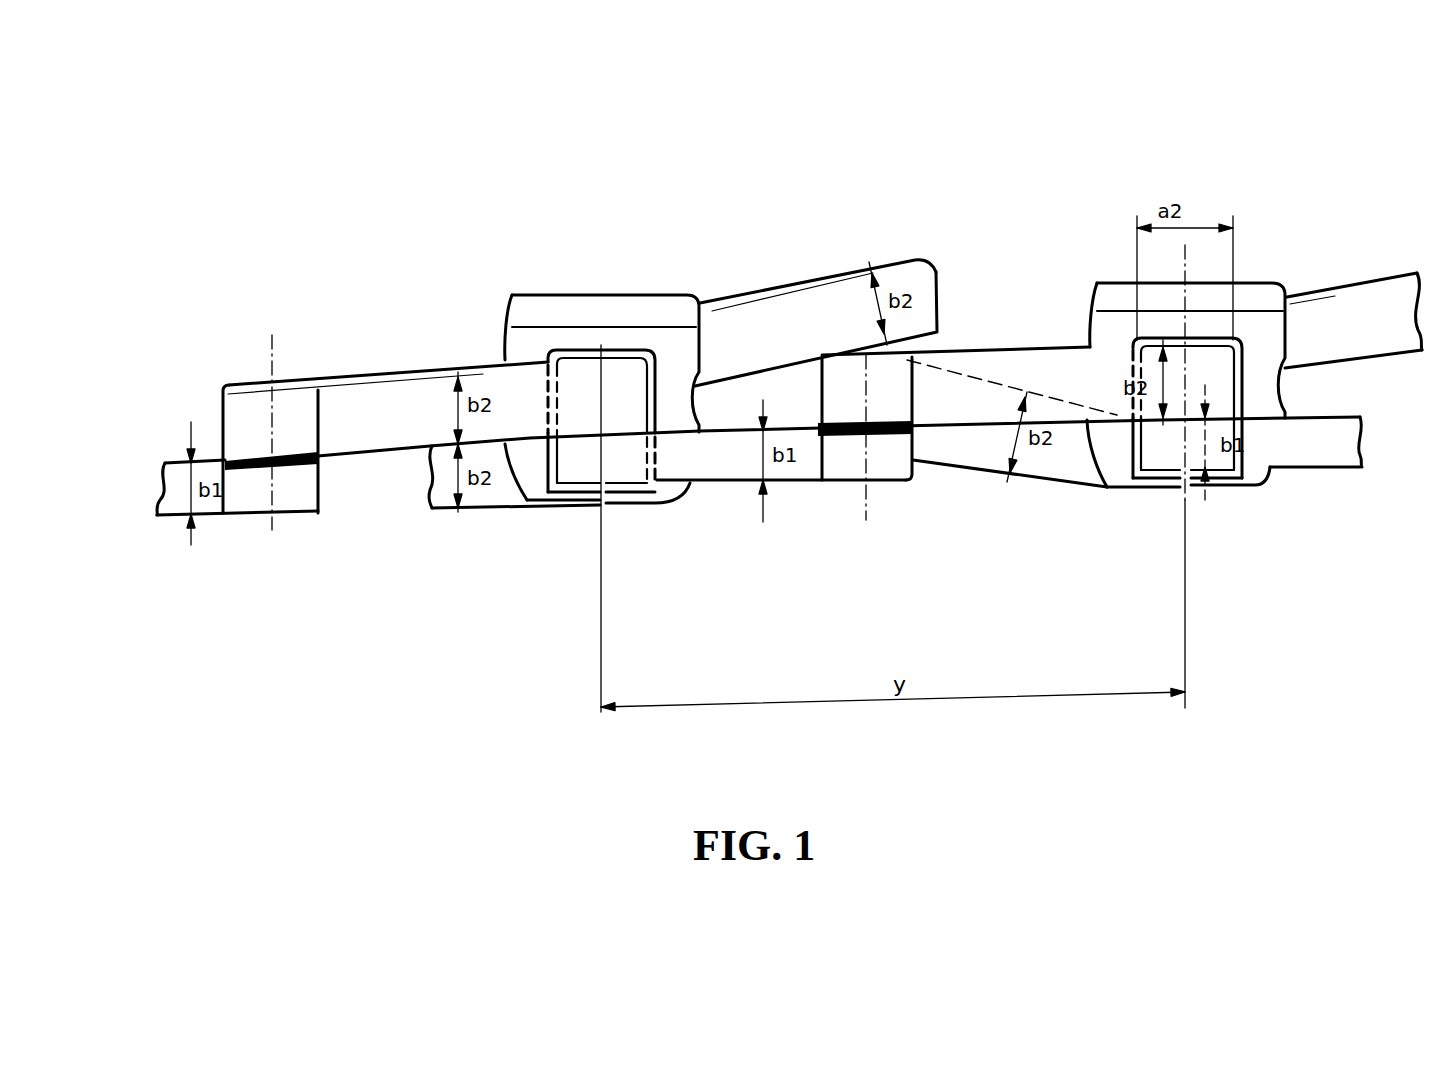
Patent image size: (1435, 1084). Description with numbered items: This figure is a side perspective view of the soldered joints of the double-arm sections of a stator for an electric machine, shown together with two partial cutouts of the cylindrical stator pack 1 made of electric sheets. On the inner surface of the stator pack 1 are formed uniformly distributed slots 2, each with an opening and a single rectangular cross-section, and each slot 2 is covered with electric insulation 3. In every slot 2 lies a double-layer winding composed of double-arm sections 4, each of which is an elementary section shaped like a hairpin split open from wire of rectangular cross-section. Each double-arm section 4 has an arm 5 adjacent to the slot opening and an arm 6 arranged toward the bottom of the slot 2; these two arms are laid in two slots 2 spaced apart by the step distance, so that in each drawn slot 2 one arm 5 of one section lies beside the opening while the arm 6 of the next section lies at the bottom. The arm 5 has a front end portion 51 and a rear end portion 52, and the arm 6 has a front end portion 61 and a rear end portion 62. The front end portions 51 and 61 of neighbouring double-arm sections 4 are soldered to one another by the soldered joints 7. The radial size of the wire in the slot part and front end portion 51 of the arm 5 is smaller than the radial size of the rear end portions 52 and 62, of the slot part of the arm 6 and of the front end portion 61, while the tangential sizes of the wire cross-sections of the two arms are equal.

The stator pack 1 is at (667, 337).
The slot 2 is at (553, 343).
The electric insulation 3 is at (613, 358).
The double-arm section 4 is at (890, 257).
The arm adjacent to opening 5 is at (1158, 445).
The arm at bottom of slot 6 is at (1213, 377).
The soldered joint 7 is at (290, 455).
The front end portion of arm 5 51 is at (176, 497).
The rear end portion of arm 5 52 is at (500, 492).
The front end portion of arm 6 61 is at (415, 410).
The rear end portion of arm 6 62 is at (762, 322).